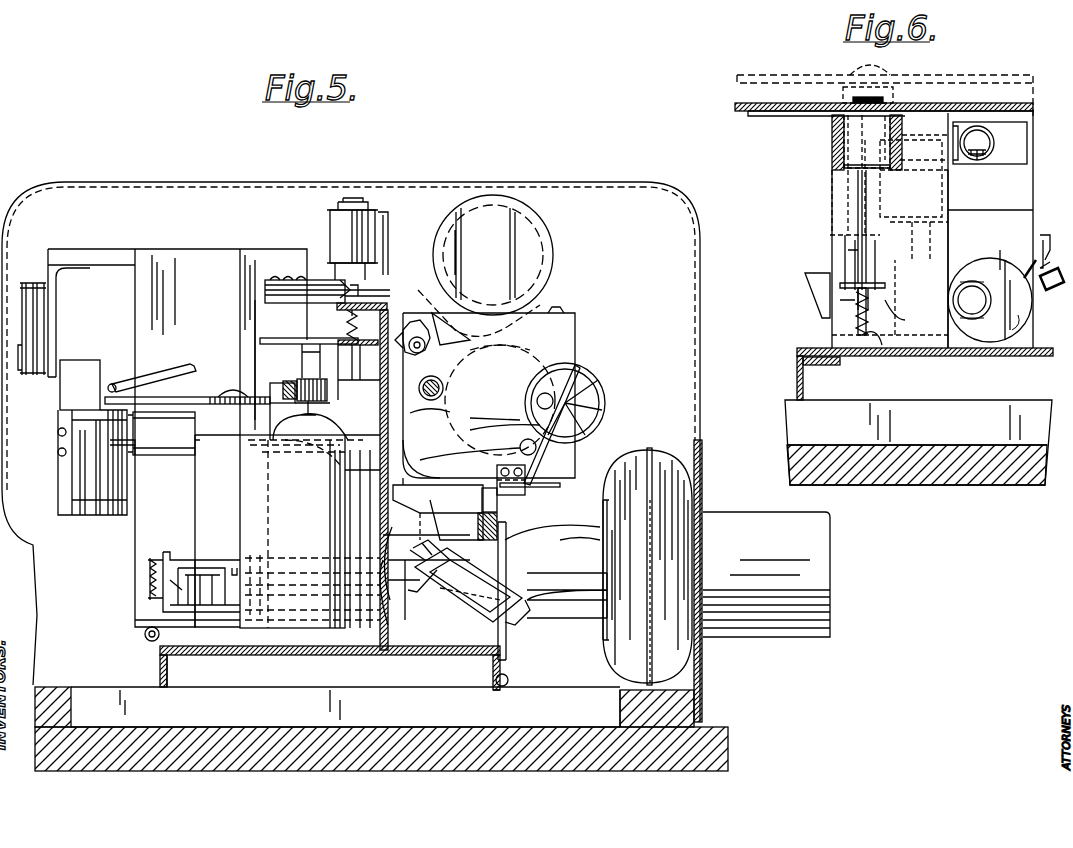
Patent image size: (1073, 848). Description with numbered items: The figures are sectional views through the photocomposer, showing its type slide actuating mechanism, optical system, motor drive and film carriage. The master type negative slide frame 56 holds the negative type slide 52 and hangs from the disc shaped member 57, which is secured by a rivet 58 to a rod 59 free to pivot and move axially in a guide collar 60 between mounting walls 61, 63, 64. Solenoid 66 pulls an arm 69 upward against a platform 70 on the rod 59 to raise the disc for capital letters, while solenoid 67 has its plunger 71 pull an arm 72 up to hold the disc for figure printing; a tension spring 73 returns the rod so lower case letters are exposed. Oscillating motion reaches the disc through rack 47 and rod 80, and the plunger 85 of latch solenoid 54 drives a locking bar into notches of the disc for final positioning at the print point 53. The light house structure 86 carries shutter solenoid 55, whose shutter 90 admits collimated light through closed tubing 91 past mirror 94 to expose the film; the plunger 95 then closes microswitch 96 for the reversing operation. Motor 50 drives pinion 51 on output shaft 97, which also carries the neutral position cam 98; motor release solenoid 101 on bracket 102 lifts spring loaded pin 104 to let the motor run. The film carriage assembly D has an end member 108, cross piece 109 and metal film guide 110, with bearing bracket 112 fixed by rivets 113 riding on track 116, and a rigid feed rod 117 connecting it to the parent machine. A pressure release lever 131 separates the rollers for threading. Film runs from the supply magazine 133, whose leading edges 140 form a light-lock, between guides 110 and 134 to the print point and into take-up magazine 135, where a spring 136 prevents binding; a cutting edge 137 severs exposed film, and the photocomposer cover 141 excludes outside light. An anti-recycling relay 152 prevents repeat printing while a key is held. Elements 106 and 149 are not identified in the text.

In FIG. 5, the rack 47 is at (292, 382).
In FIG. 5, the motor 50 is at (310, 531).
In FIG. 5, the pinion 51 is at (327, 394).
In FIG. 6, the negative type slide 52 is at (1033, 180).
In FIG. 5, the photocomposer print point 53 is at (475, 424).
In FIG. 5, the latch solenoid 54 is at (138, 436).
In FIG. 5, the shutter solenoid 55 is at (500, 626).
In FIG. 5, the master type negative slide frame 56 is at (491, 519).
In FIG. 6, the master type negative slide frame 56 is at (1033, 210).
In FIG. 5, the disc shaped member 57 is at (180, 395).
In FIG. 6, the disc shaped member 57 is at (980, 103).
In FIG. 6, the rivet 58 is at (873, 112).
In FIG. 6, the rod 59 is at (862, 205).
In FIG. 6, the guide collar 60 is at (885, 117).
In FIG. 6, the mounting wall 61 is at (832, 142).
In FIG. 6, the mounting wall 63 is at (903, 122).
In FIG. 5, the mounting wall 64 is at (95, 385).
In FIG. 6, the mounting wall 64 is at (845, 182).
In FIG. 6, the solenoid 66 is at (832, 228).
In FIG. 6, the solenoid 67 is at (942, 176).
In FIG. 6, the arm 69 is at (850, 308).
In FIG. 6, the platform 70 is at (840, 300).
In FIG. 6, the plunger 71 is at (945, 232).
In FIG. 6, the arm 72 is at (905, 320).
In FIG. 6, the tension spring 73 is at (877, 356).
In FIG. 5, the rod 80 is at (170, 374).
In FIG. 5, the plunger 85 is at (137, 443).
In FIG. 5, the light house structure 86 is at (398, 650).
In FIG. 6, the light house structure 86 is at (1022, 230).
In FIG. 5, the shutter 90 is at (345, 542).
In FIG. 6, the shutter 90 is at (1005, 322).
In FIG. 6, the closed tubing 91 is at (1022, 159).
In FIG. 6, the mirror 94 is at (990, 143).
In FIG. 5, the plunger 95 is at (395, 583).
In FIG. 6, the plunger 95 is at (1007, 287).
In FIG. 5, the microswitch 96 is at (425, 548).
In FIG. 6, the microswitch 96 is at (1040, 240).
In FIG. 5, the motor output shaft 97 is at (308, 426).
In FIG. 5, the neutral position cam 98 is at (285, 337).
In FIG. 5, the motor release solenoid 101 is at (340, 223).
In FIG. 5, the bracket 102 is at (395, 230).
In FIG. 5, the spring loaded pin 104 is at (362, 476).
In FIG. 5, the bar assembly 106 is at (330, 280).
In FIG. 5, the end member 108 is at (576, 322).
In FIG. 5, the cross piece 109 is at (565, 310).
In FIG. 5, the metal film guide 110 is at (470, 450).
In FIG. 5, the bearing bracket 112 is at (555, 462).
In FIG. 5, the rivet 113 is at (503, 465).
In FIG. 5, the track 116 is at (478, 503).
In FIG. 5, the rigid feed rod 117 is at (440, 380).
In FIG. 5, the pressure release lever 131 is at (410, 345).
In FIG. 5, the supply magazine 133 is at (600, 380).
In FIG. 5, the film guide 134 is at (560, 485).
In FIG. 5, the film take-up magazine 135 is at (580, 218).
In FIG. 5, the spring 136 is at (470, 222).
In FIG. 5, the cutting edge 137 is at (440, 320).
In FIG. 5, the leading edges of magazine 140 is at (503, 390).
In FIG. 5, the photocomposer cover 141 is at (612, 182).
In FIG. 5, the bracket 149 is at (222, 553).
In FIG. 5, the anti-recycling relay 152 is at (33, 373).
In FIG. 5, the film feed and carriage assembly D is at (594, 357).